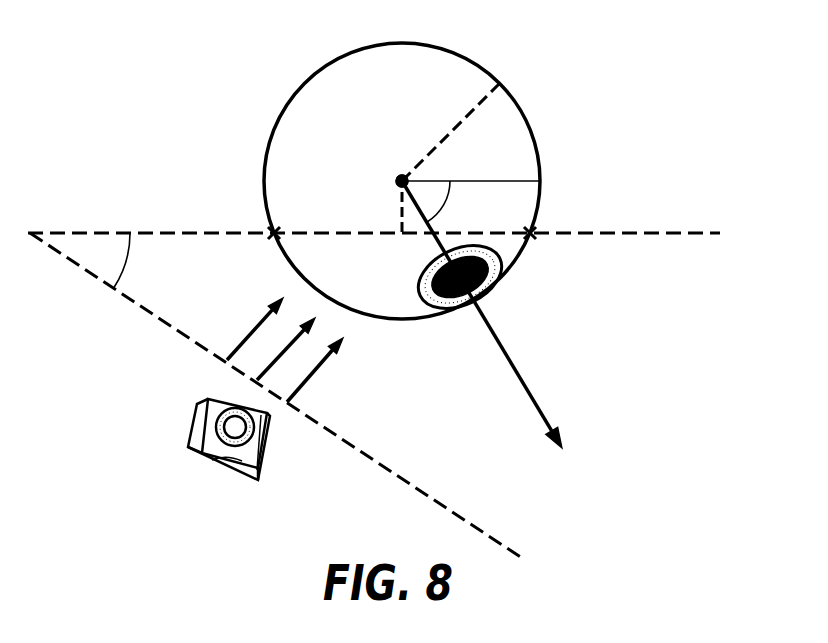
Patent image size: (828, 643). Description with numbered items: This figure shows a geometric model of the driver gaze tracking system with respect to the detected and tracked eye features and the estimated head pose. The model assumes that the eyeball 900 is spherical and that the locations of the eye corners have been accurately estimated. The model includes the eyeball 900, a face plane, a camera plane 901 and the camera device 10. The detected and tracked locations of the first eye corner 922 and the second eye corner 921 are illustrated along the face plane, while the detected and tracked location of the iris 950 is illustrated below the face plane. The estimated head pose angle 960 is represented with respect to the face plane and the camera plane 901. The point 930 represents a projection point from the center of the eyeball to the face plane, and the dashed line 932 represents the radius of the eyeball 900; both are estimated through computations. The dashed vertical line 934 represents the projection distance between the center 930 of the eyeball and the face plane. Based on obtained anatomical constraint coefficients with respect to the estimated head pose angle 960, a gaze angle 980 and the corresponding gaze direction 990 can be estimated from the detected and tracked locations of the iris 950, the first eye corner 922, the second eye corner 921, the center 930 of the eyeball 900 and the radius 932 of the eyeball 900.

The camera device 10 is at (270, 442).
The eyeball 900 is at (421, 102).
The camera plane 901 is at (423, 492).
The second eye corner 921 is at (273, 237).
The first eye corner 922 is at (533, 237).
The center of the eyeball 930 is at (397, 180).
The radius of the eyeball 932 is at (471, 112).
The projection distance 934 is at (397, 207).
The iris 950 is at (418, 300).
The head pose angle 960 is at (127, 259).
The gaze angle 980 is at (446, 206).
The gaze direction 990 is at (535, 396).